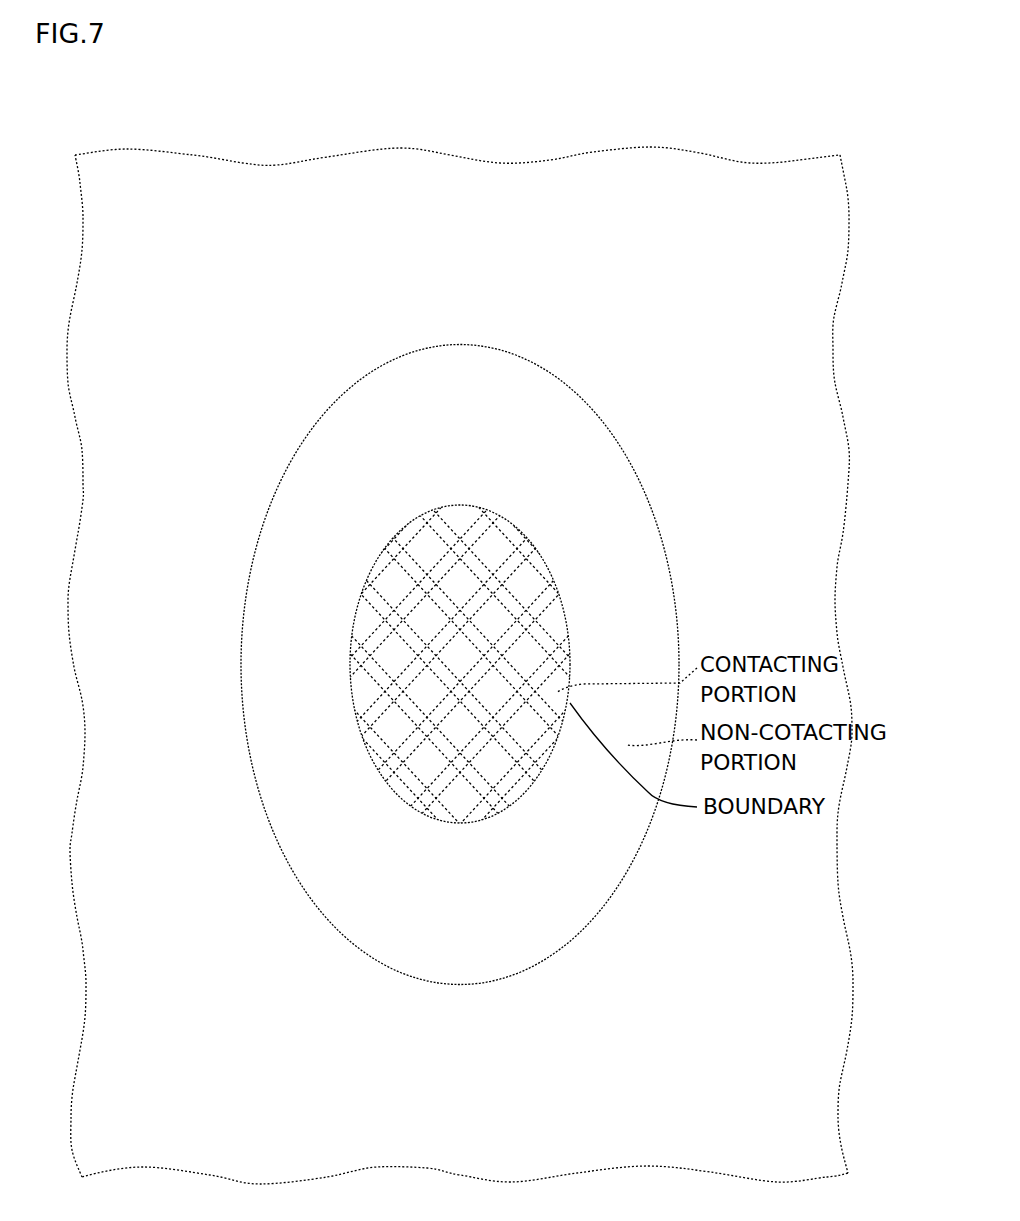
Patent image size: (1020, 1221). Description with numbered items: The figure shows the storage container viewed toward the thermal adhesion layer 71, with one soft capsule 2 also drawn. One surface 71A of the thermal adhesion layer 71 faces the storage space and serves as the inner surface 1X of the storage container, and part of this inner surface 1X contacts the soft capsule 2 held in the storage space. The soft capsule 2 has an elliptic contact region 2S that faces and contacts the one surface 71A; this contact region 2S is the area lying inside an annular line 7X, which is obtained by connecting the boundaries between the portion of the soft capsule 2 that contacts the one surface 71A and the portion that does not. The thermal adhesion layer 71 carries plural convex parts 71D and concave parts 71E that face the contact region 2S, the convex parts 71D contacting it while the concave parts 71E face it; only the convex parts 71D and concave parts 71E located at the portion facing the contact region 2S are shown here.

The thermal adhesion layer 71 is at (592, 152).
The one surface of the thermal adhesion layer 71A is at (277, 193).
The inner surface of the storage container 1X is at (445, 193).
The soft capsule 2 is at (556, 354).
The contact region 2S is at (540, 780).
The convex parts 71D is at (538, 555).
The concave parts 71E is at (538, 596).
The annular line 7X is at (465, 823).